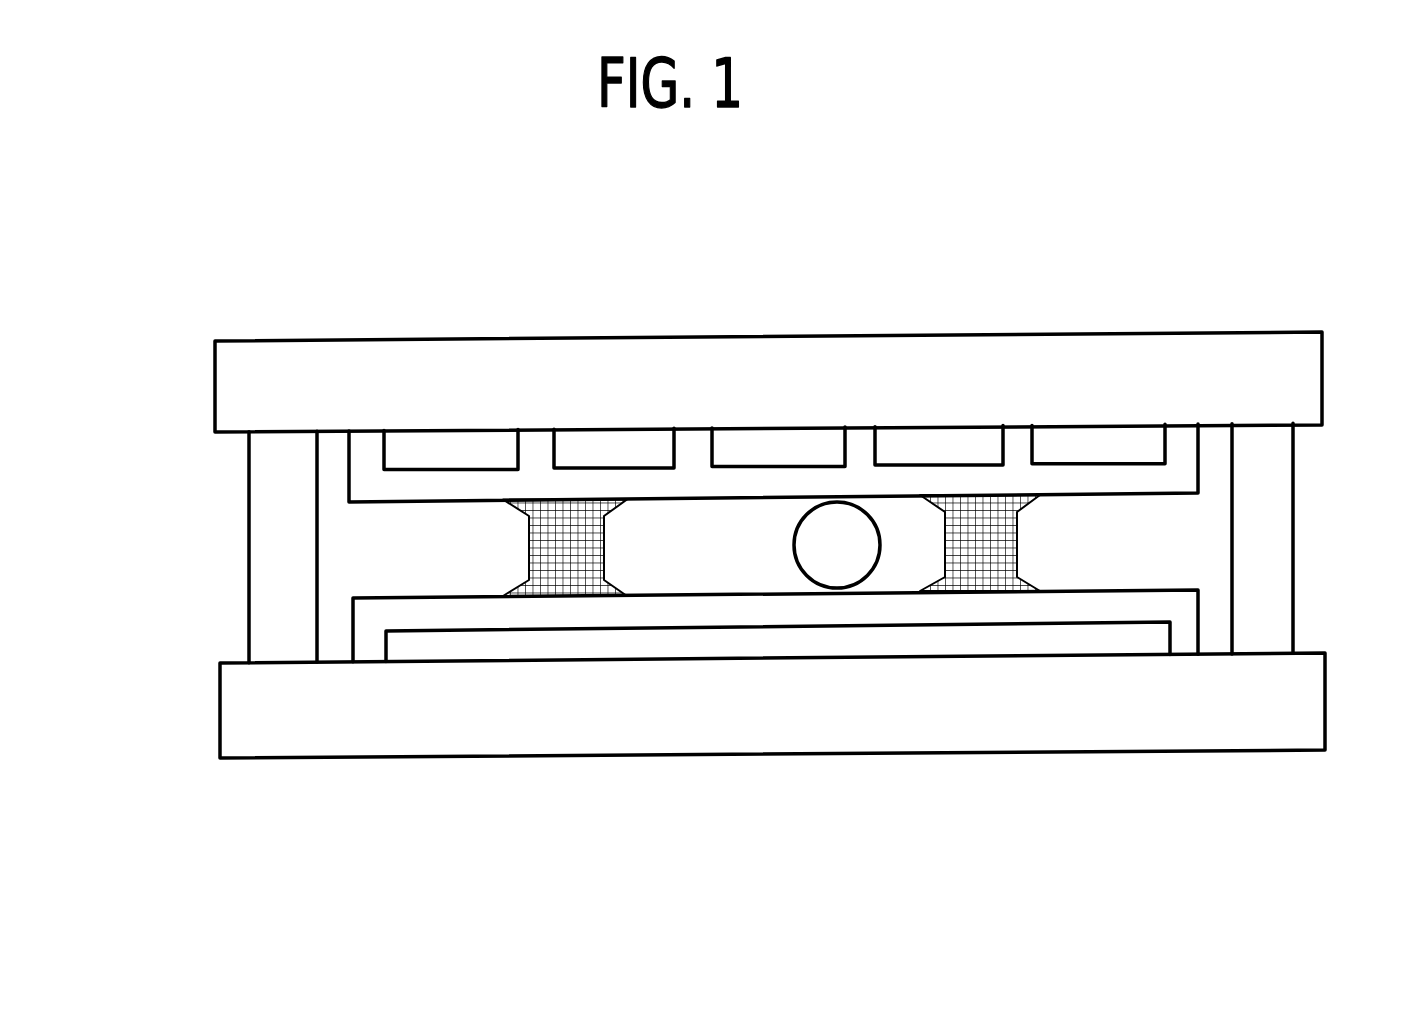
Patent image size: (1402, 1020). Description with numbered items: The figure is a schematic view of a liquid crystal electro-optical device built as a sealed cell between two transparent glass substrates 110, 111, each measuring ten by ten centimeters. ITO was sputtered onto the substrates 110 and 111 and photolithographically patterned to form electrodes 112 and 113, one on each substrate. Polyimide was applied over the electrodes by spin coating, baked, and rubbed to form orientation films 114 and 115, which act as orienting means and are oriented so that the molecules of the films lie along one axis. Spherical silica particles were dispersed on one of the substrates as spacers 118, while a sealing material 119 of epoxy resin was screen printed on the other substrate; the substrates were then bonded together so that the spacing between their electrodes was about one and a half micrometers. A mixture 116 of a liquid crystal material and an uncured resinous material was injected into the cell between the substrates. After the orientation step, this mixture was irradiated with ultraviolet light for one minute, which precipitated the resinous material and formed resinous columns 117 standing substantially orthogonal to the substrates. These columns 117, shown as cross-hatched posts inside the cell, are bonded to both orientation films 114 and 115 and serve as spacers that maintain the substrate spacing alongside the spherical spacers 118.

The transparent substrate 110 is at (408, 717).
The transparent substrate 111 is at (878, 375).
The electrode 112 is at (656, 640).
The electrode 113 is at (431, 447).
The orientation film 114 is at (943, 612).
The orientation film 115 is at (682, 484).
The liquid crystal material 116 is at (660, 533).
The resinous column 117 is at (577, 598).
The spacer 118 is at (833, 570).
The sealing material 119 is at (265, 583).